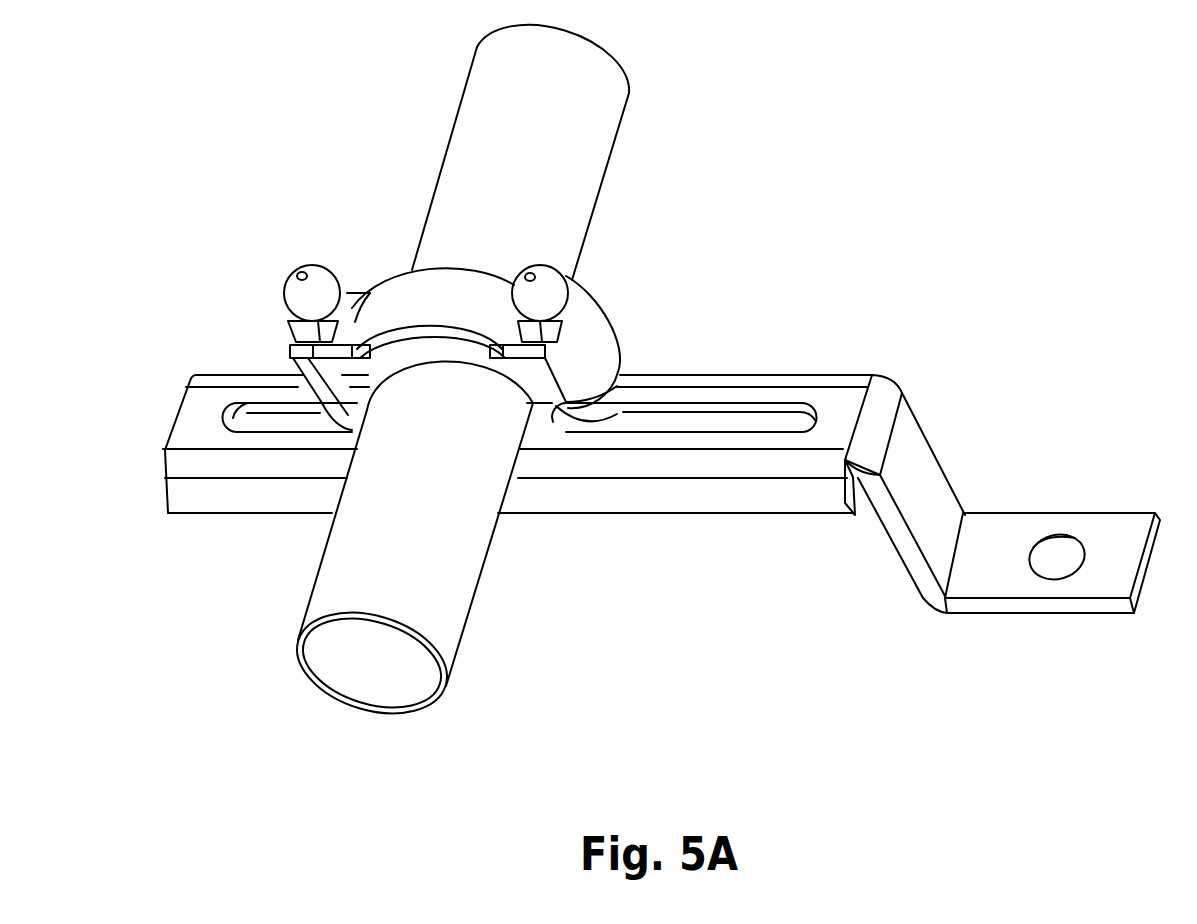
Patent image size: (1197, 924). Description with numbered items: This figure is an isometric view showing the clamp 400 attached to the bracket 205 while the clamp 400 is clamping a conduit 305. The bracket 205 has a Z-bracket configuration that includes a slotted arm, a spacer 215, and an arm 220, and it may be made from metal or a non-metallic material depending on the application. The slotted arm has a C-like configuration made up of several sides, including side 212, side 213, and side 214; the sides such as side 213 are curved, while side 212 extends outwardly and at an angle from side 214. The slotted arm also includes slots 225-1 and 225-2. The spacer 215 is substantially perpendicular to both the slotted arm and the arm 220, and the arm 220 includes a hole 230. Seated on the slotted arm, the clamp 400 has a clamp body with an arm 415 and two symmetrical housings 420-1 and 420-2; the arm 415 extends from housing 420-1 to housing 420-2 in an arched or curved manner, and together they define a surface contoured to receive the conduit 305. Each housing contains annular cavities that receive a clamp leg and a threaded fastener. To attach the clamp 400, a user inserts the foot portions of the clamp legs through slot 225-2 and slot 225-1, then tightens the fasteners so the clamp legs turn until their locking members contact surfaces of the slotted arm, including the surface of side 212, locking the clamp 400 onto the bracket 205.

The conduit 305 is at (567, 160).
The arm 415 is at (437, 310).
The clamp 400 is at (388, 255).
The housing 420-1 is at (585, 358).
The housing 420-2 is at (280, 357).
The bracket 205 is at (213, 357).
The spacer 215 is at (207, 382).
The side 214 is at (195, 415).
The side 213 is at (188, 462).
The side 212 is at (190, 495).
The slot 225-1 is at (283, 422).
The slot 225-2 is at (717, 422).
The arm 220 is at (980, 535).
The hole 230 is at (1052, 562).